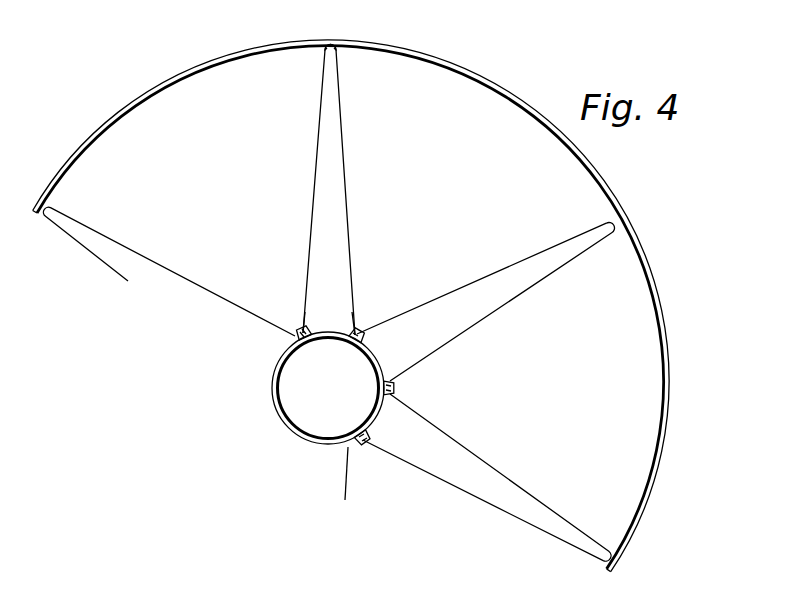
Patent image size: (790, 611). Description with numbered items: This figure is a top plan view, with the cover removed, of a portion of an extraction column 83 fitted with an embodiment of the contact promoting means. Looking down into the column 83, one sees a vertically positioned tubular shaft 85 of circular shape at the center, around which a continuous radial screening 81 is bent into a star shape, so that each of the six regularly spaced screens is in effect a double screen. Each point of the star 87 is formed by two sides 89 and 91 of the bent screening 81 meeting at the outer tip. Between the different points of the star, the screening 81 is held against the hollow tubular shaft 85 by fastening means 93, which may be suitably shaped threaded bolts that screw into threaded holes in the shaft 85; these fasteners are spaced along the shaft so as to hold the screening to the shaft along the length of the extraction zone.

The radial screening 81 is at (87, 253).
The column 83 is at (638, 541).
The tubular shaft 85 is at (272, 395).
The point of the star 87 is at (333, 44).
The side 89 is at (314, 196).
The side 91 is at (345, 148).
The fastening means 93 is at (363, 330).